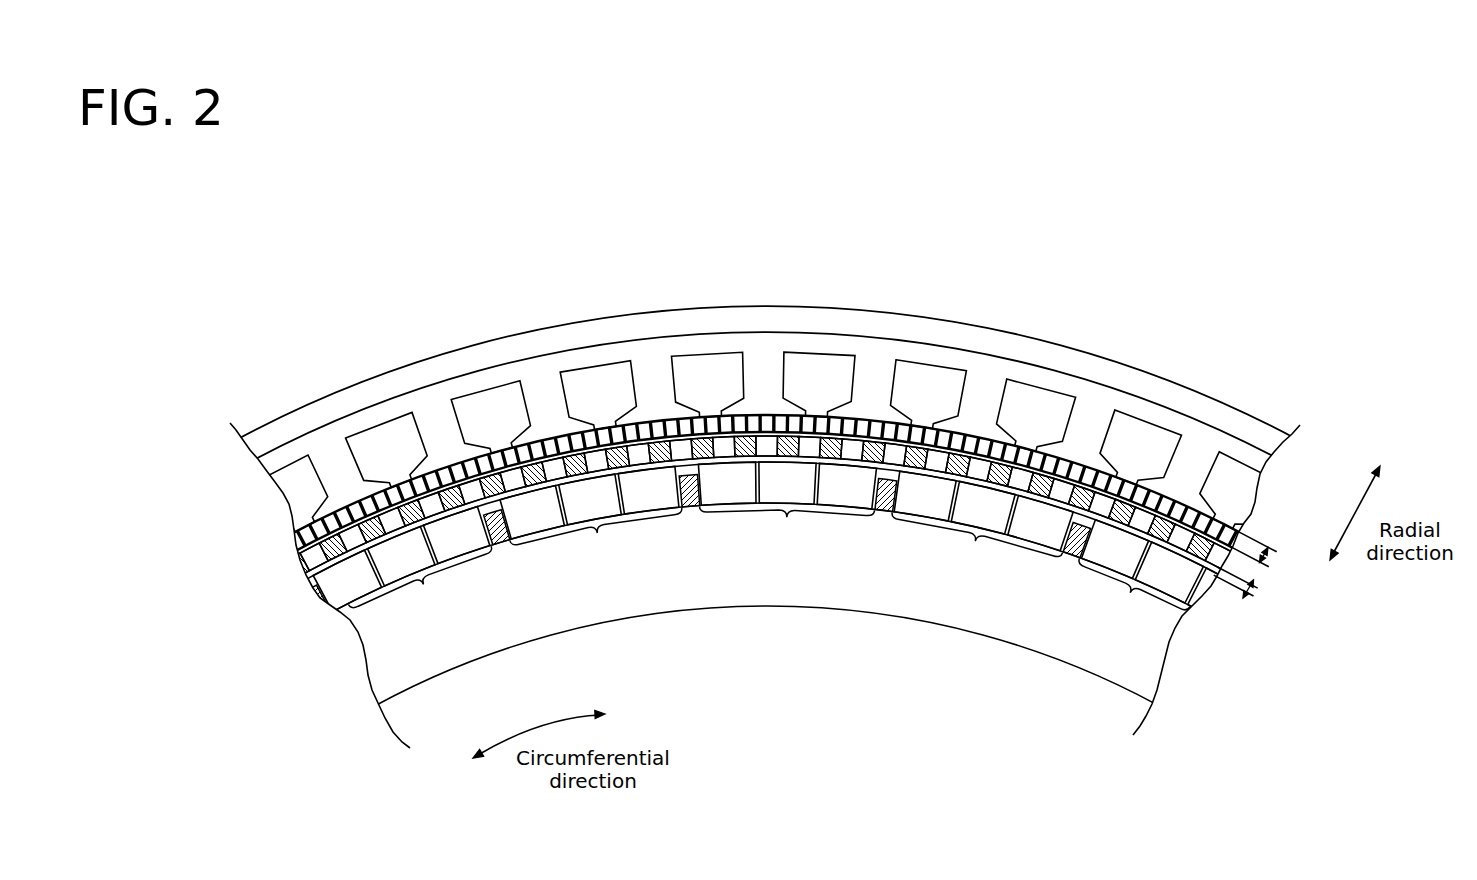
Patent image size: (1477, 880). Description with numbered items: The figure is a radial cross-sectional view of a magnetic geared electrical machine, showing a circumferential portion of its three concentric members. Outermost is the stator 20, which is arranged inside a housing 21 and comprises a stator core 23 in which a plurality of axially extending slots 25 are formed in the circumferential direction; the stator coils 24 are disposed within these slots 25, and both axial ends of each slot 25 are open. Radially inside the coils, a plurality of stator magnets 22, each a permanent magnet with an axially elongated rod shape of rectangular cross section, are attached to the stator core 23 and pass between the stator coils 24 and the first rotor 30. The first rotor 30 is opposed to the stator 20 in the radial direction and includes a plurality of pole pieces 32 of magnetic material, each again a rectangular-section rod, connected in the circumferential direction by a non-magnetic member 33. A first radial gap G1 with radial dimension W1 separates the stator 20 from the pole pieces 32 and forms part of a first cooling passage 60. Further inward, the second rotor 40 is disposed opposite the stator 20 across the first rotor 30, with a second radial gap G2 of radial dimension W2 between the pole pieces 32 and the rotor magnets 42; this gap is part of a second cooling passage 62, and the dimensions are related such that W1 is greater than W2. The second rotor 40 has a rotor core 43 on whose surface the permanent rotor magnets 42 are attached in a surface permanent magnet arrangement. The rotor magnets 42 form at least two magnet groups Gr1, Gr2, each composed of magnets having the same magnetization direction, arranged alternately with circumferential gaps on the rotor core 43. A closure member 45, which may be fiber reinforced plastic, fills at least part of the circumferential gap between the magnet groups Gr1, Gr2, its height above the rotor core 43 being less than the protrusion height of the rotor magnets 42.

The stator 20 is at (850, 240).
The housing 21 is at (466, 360).
The stator magnet 22 is at (767, 420).
The stator core 23 is at (657, 360).
The stator coil 24 is at (712, 372).
The slot 25 is at (922, 357).
The first rotor 30 is at (412, 280).
The pole piece 32 is at (432, 500).
The non-magnetic member 33 is at (410, 507).
The second rotor 40 is at (635, 229).
The rotor magnet 42 is at (577, 483).
The rotor core 43 is at (692, 547).
The closure member 45 is at (493, 507).
The first cooling passage 60 is at (1090, 478).
The second cooling passage 62 is at (1058, 485).
The first radial gap G1 is at (1238, 533).
The second radial gap G2 is at (1212, 572).
The radial dimension of first radial gap W1 is at (1284, 562).
The radial dimension of second radial gap W2 is at (1276, 596).
The magnet group Gr1 is at (769, 573).
The magnet group Gr2 is at (786, 543).